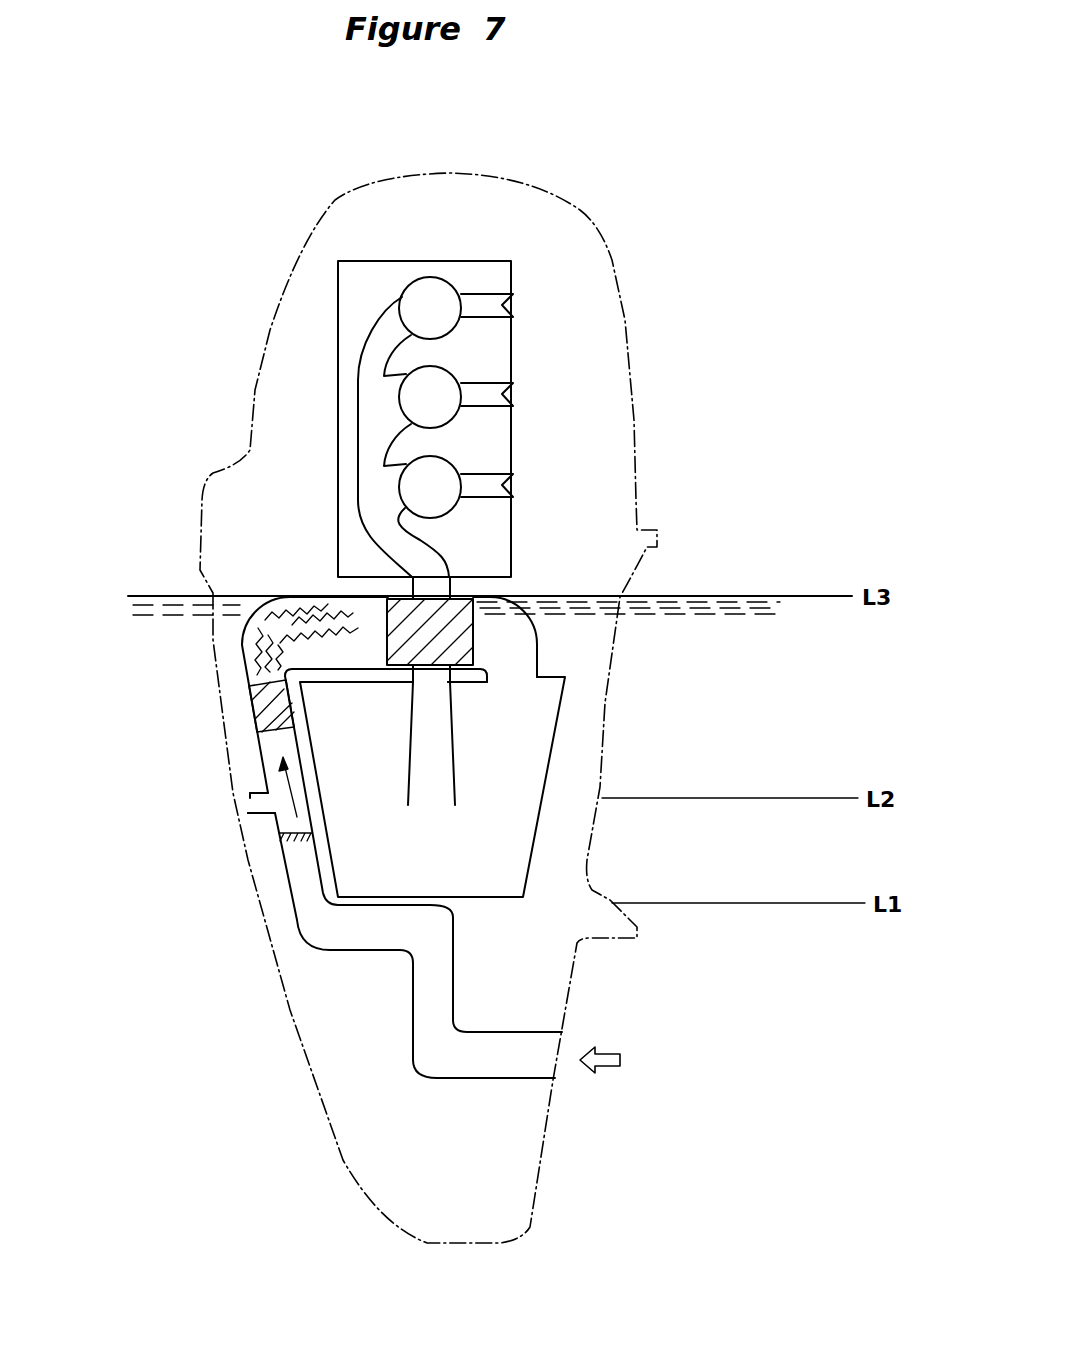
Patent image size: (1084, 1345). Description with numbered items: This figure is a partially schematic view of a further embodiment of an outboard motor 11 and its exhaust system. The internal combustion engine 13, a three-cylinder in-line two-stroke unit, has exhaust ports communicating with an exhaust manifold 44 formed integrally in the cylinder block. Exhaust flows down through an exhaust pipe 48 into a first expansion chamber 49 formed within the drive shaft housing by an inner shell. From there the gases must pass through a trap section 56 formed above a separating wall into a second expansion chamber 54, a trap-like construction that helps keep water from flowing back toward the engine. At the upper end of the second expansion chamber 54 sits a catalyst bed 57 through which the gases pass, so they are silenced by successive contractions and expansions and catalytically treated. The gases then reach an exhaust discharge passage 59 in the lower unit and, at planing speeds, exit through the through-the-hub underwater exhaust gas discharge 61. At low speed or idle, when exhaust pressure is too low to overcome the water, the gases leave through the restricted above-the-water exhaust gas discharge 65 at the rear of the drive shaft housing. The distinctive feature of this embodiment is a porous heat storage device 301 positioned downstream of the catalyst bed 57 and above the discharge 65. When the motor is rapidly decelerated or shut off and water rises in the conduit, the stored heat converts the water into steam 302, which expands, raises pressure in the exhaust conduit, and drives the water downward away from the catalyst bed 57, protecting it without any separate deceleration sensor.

The outboard motor 11 is at (632, 272).
The internal combustion engine 13 is at (412, 246).
The exhaust manifold 44 is at (378, 408).
The exhaust pipe 48 is at (408, 730).
The first expansion chamber 49 is at (513, 862).
The second expansion chamber 54 is at (322, 870).
The trap section 56 is at (532, 658).
The catalyst bed 57 is at (452, 597).
The exhaust discharge passage 59 is at (453, 982).
The underwater exhaust gas discharge 61 is at (532, 1075).
The above-the-water exhaust gas discharge 65 is at (260, 790).
The heat storage device 301 is at (272, 708).
The steam 302 is at (245, 628).